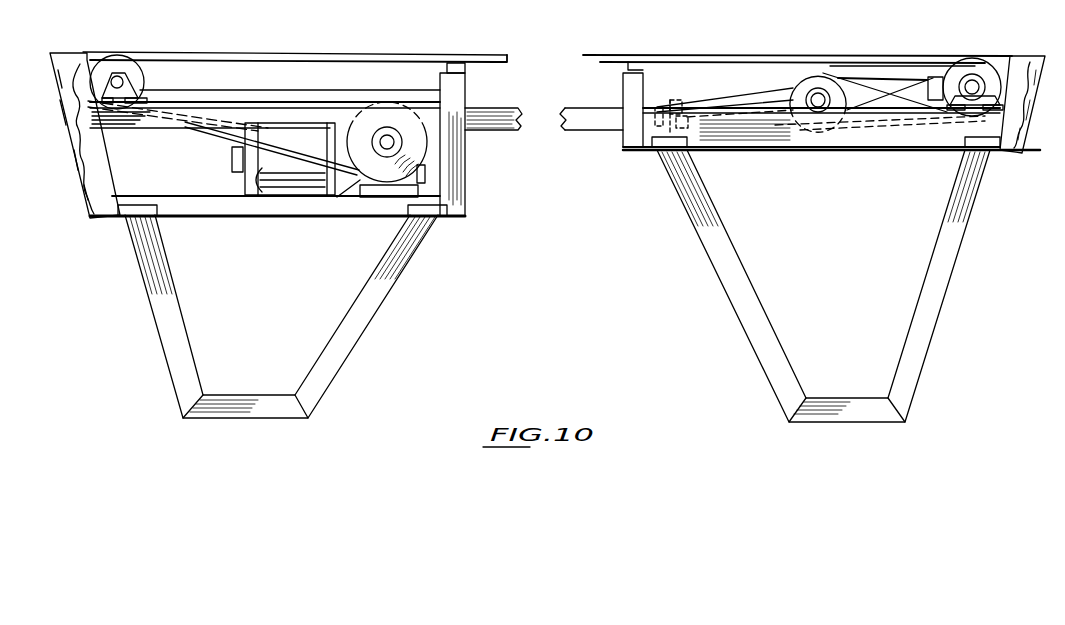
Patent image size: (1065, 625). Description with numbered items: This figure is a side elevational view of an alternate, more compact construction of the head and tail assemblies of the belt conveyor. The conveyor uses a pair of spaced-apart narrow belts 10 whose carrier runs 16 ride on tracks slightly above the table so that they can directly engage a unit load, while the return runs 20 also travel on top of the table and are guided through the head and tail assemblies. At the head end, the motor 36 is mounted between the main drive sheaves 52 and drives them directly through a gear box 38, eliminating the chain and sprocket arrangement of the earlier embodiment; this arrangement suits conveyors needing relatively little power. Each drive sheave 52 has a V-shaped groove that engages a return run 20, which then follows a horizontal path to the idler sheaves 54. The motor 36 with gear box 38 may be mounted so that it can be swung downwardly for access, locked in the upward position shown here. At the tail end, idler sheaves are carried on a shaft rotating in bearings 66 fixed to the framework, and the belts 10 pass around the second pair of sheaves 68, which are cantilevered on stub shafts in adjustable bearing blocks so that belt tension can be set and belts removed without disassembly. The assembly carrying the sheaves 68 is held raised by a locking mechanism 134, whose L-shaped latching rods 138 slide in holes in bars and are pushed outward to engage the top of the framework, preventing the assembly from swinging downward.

The belts 10 is at (212, 140).
The carrier runs 16 is at (436, 53).
The return runs 20 is at (396, 63).
The motor 36 is at (246, 170).
The gear box 38 is at (424, 178).
The main drive sheaves 52 is at (414, 147).
The idler sheaves 54 is at (108, 67).
The bearings 66 is at (977, 103).
The sheaves 68 is at (820, 119).
The locking mechanism 134 is at (656, 105).
The L-shaped latching rod 138 is at (640, 137).